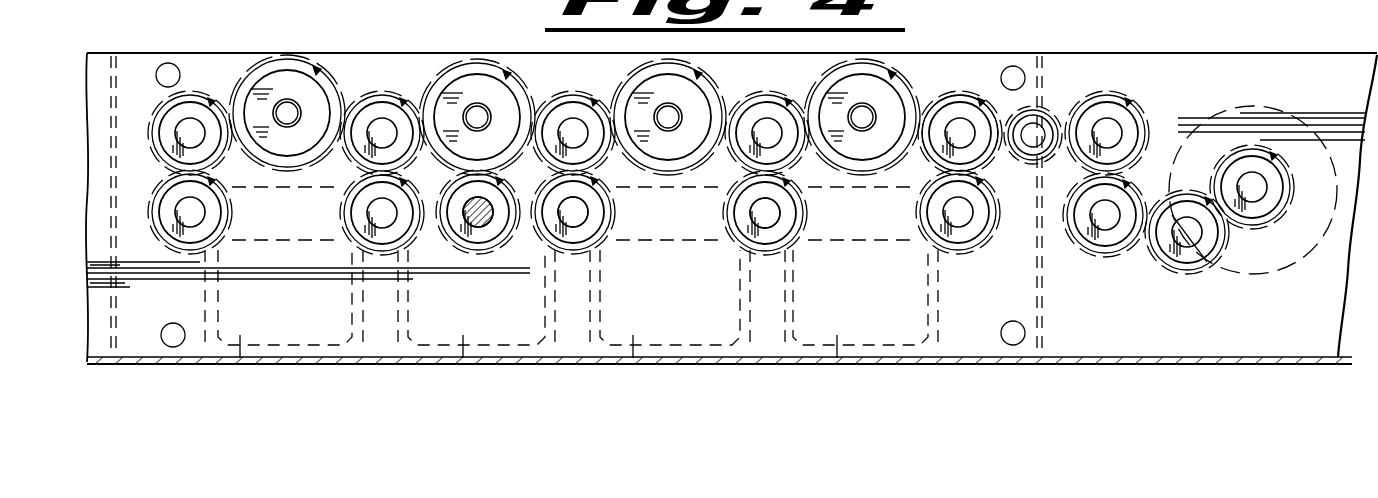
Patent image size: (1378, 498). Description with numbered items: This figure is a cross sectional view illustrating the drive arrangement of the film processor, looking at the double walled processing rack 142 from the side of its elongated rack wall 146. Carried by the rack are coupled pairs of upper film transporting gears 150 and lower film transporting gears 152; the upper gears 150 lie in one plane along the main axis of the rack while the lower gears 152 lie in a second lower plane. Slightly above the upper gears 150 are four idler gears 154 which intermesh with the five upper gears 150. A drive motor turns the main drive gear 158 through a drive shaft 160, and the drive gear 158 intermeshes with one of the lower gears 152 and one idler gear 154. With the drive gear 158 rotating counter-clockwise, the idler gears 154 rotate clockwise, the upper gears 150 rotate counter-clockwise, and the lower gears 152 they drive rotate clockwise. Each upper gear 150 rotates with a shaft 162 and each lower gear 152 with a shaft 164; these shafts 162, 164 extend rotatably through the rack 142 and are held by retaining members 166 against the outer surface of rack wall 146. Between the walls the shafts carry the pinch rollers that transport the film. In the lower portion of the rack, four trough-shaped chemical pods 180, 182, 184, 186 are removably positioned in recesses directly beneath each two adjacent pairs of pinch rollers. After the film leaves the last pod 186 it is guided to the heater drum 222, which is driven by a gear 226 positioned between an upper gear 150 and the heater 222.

The processing rack 142 is at (1212, 58).
The rack wall 146 is at (1166, 55).
The upper film transporting gear 150 is at (378, 95).
The lower film transporting gear 152 is at (355, 213).
The idler gear 154 is at (287, 62).
The main drive gear 158 is at (477, 250).
The drive shaft 160 is at (472, 224).
The shaft 162 is at (190, 125).
The shaft 164 is at (757, 220).
The retaining member 166 is at (977, 117).
The chemical pod 180 is at (243, 367).
The chemical pod 182 is at (462, 367).
The chemical pod 184 is at (632, 367).
The chemical pod 186 is at (836, 367).
The heater drum 222 is at (1274, 110).
The gear 226 is at (1043, 110).